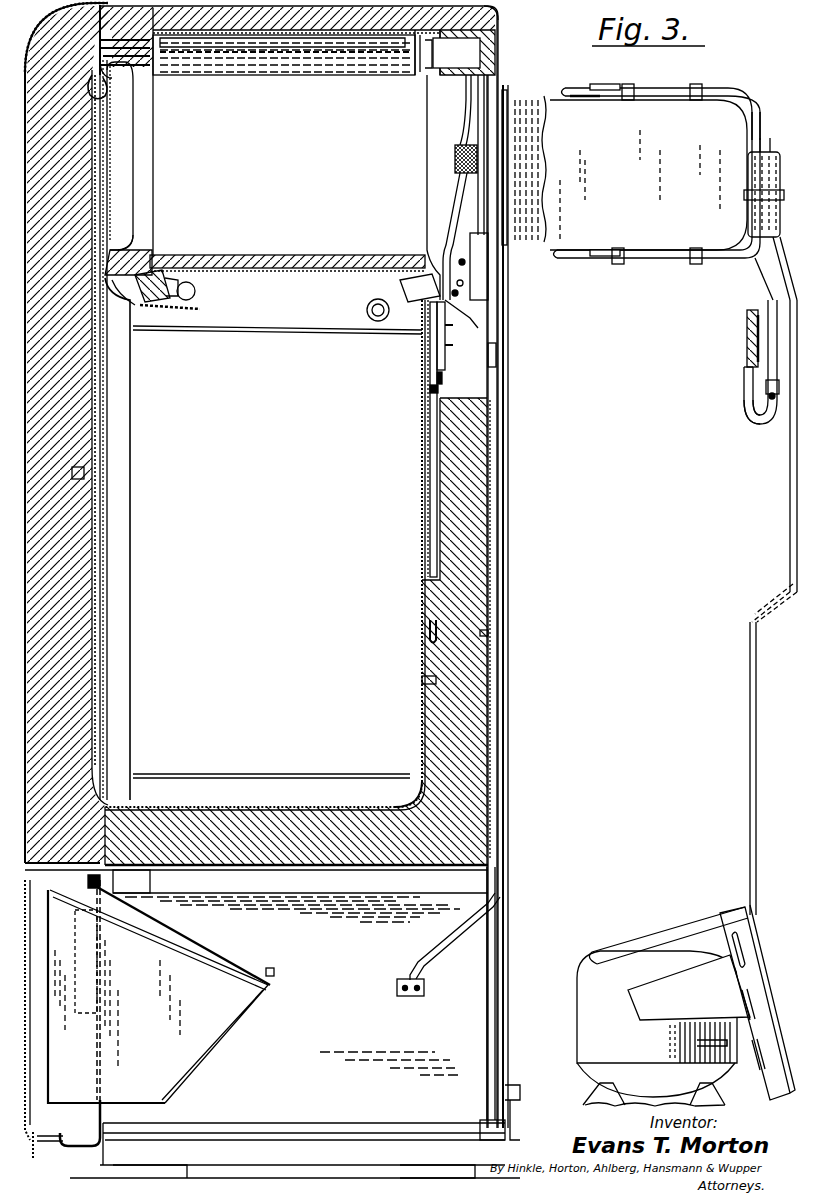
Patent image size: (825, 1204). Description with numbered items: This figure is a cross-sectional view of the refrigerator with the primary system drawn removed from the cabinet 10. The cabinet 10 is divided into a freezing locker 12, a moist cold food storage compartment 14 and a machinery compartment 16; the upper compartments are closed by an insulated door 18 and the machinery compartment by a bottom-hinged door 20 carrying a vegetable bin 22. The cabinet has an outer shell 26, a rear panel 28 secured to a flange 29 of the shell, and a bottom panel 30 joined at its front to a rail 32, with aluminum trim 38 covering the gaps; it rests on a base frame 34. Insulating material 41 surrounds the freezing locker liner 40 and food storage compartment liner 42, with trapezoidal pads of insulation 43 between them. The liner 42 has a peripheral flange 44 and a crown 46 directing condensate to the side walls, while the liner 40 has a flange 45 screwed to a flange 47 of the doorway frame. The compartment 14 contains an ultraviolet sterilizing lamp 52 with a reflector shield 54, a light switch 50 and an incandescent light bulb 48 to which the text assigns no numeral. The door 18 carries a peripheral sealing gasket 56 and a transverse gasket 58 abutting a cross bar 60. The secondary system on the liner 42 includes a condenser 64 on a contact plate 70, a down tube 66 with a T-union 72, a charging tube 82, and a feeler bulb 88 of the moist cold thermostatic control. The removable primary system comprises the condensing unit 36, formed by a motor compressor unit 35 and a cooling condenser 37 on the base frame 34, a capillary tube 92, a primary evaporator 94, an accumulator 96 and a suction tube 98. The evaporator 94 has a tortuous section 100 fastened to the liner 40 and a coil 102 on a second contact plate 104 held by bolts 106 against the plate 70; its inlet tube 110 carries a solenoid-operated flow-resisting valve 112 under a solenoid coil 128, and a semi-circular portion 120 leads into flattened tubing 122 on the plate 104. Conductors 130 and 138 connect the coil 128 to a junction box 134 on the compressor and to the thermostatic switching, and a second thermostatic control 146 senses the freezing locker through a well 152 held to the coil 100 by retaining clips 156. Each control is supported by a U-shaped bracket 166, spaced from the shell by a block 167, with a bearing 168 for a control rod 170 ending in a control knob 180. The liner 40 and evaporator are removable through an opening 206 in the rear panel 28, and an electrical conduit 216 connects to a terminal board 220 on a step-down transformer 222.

The cabinet 10 is at (506, 41).
The freezing locker 12 is at (647, 110).
The food storage and moist cold compartment 14 is at (284, 533).
The machinery compartment 16 is at (340, 1033).
The insulated door 18 is at (78, 555).
The separate door 20 is at (25, 1050).
The vegetable bin 22 is at (145, 1000).
The outer shell 26 is at (248, 40).
The rear panel 28 is at (500, 566).
The flange 29 is at (500, 14).
The bottom panel 30 is at (322, 870).
The rail 32 is at (88, 887).
The base frame 34 is at (272, 1123).
The motor compressor unit 35 is at (655, 1053).
The refrigerant liquefying or condensing unit 36 is at (680, 920).
The cooling condenser 37 is at (735, 915).
The extruded aluminum trim 38 is at (147, 874).
The freezing locker liner 40 is at (668, 189).
The thermal insulating material 41 is at (462, 688).
The food storage compartment liner 42 is at (432, 737).
The blocks or pads of insulation 43 is at (290, 257).
The peripheral flange 44 is at (215, 12).
The forwardly facing flange 45 is at (505, 95).
The crown 46 is at (248, 290).
The flange 47 is at (140, 240).
The lamp 48 is at (367, 312).
The switch 50 is at (103, 92).
The ultraviolet sterilizing lamp 52 is at (262, 292).
The reflector shield 54 is at (192, 310).
The peripheral sealing gasket 56 is at (62, 8).
The sealing gasket 58 is at (98, 225).
The cross bar 60 is at (131, 365).
The condenser 64 is at (436, 338).
The down tube 66 is at (425, 485).
The contact plate 70 is at (438, 350).
The T-union 72 is at (428, 630).
The charging tube 82 is at (432, 392).
The feeler bulb 88 is at (486, 113).
The capillary tube 92 is at (785, 296).
The primary evaporator 94 is at (767, 108).
The accumulator 96 is at (751, 176).
The suction tube 98 is at (789, 495).
The evaporator section 100 is at (620, 70).
The evaporator coil 102 is at (740, 328).
The second contact plate 104 is at (748, 345).
The bolts 106 is at (480, 328).
The tube 110 is at (766, 400).
The solenoid-operated flow-resisting valve 112 is at (766, 384).
The semi-circular portion 120 is at (758, 420).
The tubing 122 is at (752, 357).
The solenoid coil 128 is at (454, 155).
The conductor 130 is at (452, 196).
The junction box 134 is at (413, 1003).
The conductor 138 is at (458, 115).
The second thermostatic control 146 is at (490, 52).
The well 152 is at (596, 98).
The retaining clips 156 is at (628, 100).
The U-shaped bracket 166 is at (456, 53).
The block 167 is at (402, 20).
The bearing 168 is at (428, 70).
The control rod 170 is at (228, 74).
The control knob 180 is at (330, 45).
The opening 206 is at (494, 357).
The electrical conduit 216 is at (500, 633).
The terminal board 220 is at (470, 268).
The transformer 222 is at (478, 292).